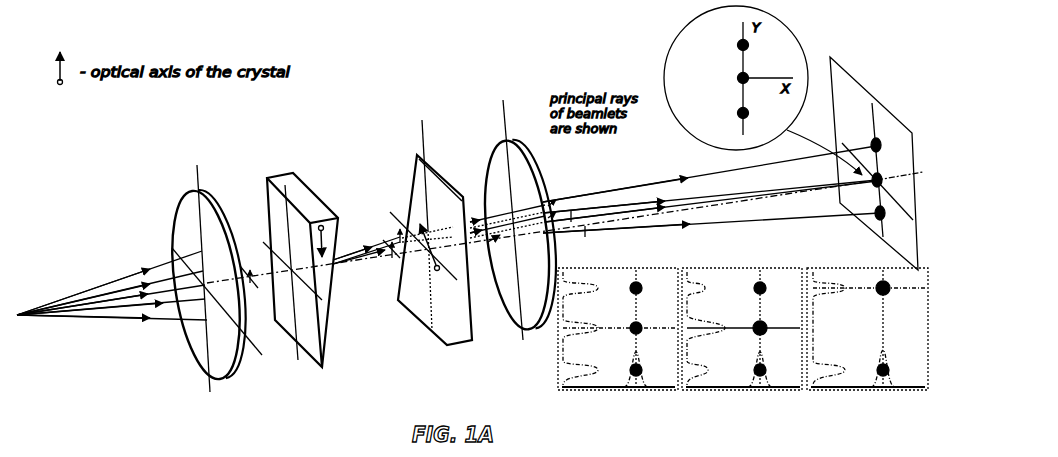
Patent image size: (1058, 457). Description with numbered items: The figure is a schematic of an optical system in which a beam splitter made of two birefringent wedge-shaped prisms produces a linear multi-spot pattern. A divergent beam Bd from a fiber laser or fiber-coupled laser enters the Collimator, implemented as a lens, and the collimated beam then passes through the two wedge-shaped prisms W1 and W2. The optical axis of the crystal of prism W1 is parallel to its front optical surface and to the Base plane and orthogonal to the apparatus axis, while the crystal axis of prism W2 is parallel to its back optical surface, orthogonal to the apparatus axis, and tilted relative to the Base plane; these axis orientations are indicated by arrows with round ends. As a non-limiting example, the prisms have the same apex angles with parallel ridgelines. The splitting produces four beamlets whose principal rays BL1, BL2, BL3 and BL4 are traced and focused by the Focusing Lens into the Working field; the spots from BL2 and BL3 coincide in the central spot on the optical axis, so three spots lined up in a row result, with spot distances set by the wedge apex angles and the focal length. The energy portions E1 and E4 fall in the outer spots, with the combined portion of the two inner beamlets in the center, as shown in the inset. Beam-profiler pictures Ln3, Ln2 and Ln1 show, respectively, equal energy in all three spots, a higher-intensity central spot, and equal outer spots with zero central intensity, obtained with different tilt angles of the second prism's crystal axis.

The collimator Collimator is at (183, 204).
The divergent light beam Bd is at (112, 285).
The wedge-shaped prism W1 is at (268, 178).
The wedge-shaped prism W2 is at (409, 232).
The focusing optical system Focusing Lens is at (508, 137).
The principal ray of beamlet BL1 is at (588, 195).
The principal ray of beamlet BL2 is at (632, 205).
The principal ray of beamlet BL3 is at (613, 217).
The principal ray of beamlet BL4 is at (667, 229).
The portion of energy E1 is at (727, 49).
The portion of energy E4 is at (727, 117).
The working field Working field is at (878, 145).
The line-shaped multi-spot pattern Ln1 is at (867, 345).
The line-shaped multi-spot pattern Ln2 is at (742, 345).
The line-shaped multi-spot pattern Ln3 is at (618, 345).